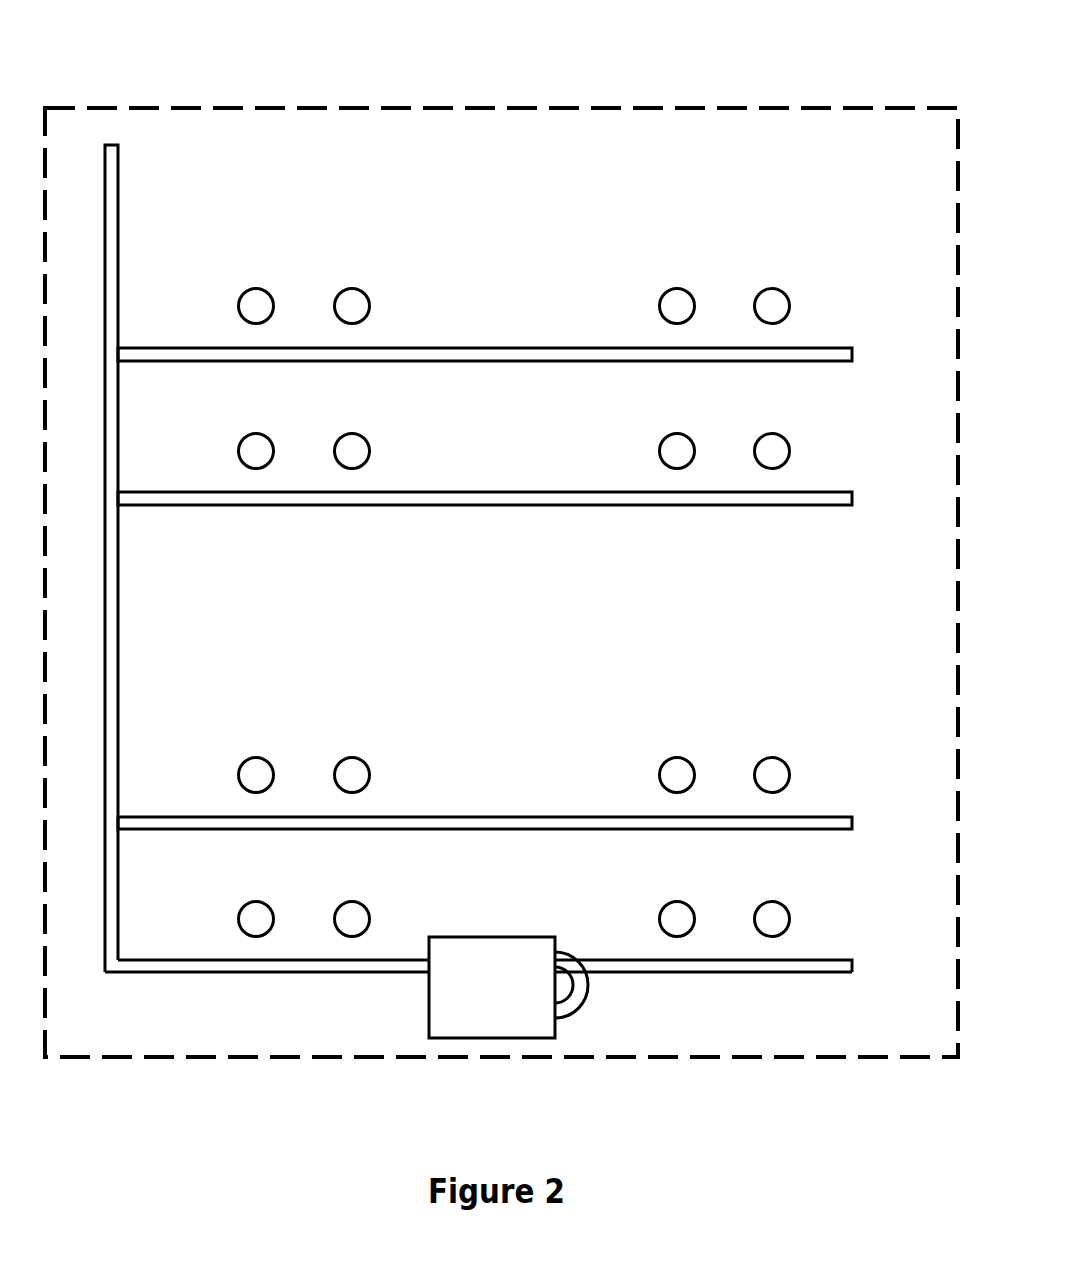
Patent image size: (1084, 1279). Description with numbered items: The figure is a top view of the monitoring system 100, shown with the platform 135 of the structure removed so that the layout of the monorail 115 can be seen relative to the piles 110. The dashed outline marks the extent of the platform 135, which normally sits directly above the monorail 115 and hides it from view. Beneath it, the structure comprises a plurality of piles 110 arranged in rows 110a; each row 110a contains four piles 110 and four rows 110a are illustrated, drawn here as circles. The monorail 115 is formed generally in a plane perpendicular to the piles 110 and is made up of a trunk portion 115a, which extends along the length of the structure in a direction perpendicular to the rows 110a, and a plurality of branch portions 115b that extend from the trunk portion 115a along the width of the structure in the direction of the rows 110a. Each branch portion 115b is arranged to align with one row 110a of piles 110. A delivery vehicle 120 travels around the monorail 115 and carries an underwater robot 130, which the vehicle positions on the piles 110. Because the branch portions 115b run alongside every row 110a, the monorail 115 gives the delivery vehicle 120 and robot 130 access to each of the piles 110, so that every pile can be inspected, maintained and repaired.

The monitoring system 100 is at (709, 74).
The platform 135 is at (178, 100).
The piles 110 is at (370, 305).
The rows 110a is at (833, 742).
The monorail 115 is at (126, 570).
The trunk portion 115a is at (126, 657).
The branch portions 115b is at (487, 484).
The delivery vehicle 120 is at (562, 987).
The underwater robot 130 is at (574, 1018).